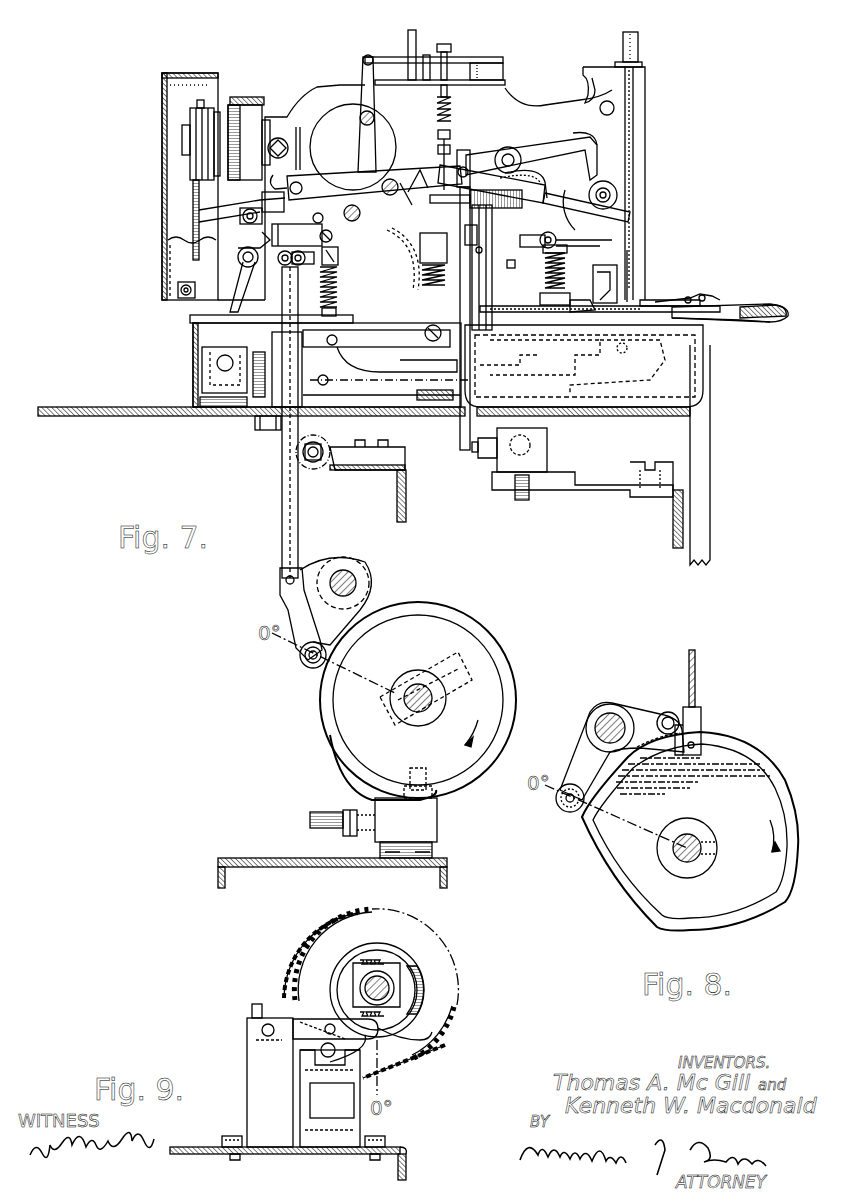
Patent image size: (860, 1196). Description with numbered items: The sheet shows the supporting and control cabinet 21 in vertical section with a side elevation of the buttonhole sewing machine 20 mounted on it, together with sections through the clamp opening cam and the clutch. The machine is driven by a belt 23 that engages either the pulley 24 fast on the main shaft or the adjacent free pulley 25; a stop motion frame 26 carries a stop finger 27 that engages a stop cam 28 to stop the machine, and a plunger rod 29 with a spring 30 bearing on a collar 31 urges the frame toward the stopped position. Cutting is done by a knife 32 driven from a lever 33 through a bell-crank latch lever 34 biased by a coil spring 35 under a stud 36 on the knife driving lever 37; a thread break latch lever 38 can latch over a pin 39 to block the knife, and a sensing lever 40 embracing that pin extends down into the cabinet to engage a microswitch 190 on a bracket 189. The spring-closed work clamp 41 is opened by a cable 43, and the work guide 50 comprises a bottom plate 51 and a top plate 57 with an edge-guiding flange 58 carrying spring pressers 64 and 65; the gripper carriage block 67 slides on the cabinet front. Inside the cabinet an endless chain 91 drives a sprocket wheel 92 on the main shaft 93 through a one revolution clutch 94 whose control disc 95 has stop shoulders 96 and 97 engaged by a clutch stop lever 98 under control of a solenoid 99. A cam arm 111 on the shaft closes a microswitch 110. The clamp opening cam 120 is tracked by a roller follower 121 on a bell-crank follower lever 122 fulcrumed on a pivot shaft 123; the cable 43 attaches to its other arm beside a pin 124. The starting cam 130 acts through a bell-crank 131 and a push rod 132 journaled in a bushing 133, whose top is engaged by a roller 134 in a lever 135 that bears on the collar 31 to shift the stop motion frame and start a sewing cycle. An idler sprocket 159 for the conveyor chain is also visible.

In FIG. 7, the sewing machine 20 is at (650, 128).
In FIG. 7, the cabinet 21 is at (118, 405).
In FIG. 7, the belt 23 is at (185, 240).
In FIG. 7, the pulley 24 is at (217, 115).
In FIG. 7, the pulley 25 is at (196, 130).
In FIG. 7, the stop motion frame 26 is at (250, 205).
In FIG. 7, the stop finger 27 is at (255, 185).
In FIG. 7, the stop cam 28 is at (252, 136).
In FIG. 7, the plunger rod 29 is at (322, 236).
In FIG. 7, the spring 30 is at (340, 290).
In FIG. 7, the collar 31 is at (340, 265).
In FIG. 7, the knife 32 is at (628, 305).
In FIG. 7, the lever 33 is at (320, 202).
In FIG. 7, the bell-crank latch lever 34 is at (412, 195).
In FIG. 7, the coil spring 35 is at (388, 180).
In FIG. 7, the stud 36 is at (460, 165).
In FIG. 7, the knife driving lever 37 is at (540, 152).
In FIG. 7, the latch lever 38 is at (563, 195).
In FIG. 7, the pin 39 is at (488, 208).
In FIG. 7, the sensing lever 40 is at (463, 432).
In FIG. 7, the work holding clamp 41 is at (540, 303).
In FIG. 8, the cable 43 is at (695, 665).
In FIG. 7, the work guide 50 is at (680, 300).
In FIG. 7, the bottom plate 51 is at (685, 378).
In FIG. 7, the top plate 57 is at (742, 322).
In FIG. 7, the edge-guiding flange 58 is at (752, 306).
In FIG. 7, the spring work pressing member 64 is at (662, 308).
In FIG. 7, the spring work pressing member 65 is at (572, 300).
In FIG. 7, the carriage block 67 is at (708, 420).
In FIG. 9, the endless chain 91 is at (292, 985).
In FIG. 9, the sprocket wheel 92 is at (358, 910).
In FIG. 7, the main shaft 93 is at (414, 685).
In FIG. 8, the main shaft 93 is at (695, 846).
In FIG. 9, the main shaft 93 is at (364, 982).
In FIG. 9, the one revolution clutch 94 is at (353, 962).
In FIG. 9, the multiple trip control disc 95 is at (397, 955).
In FIG. 9, the stop shoulder 96 is at (380, 1032).
In FIG. 9, the stop shoulder 97 is at (416, 972).
In FIG. 9, the clutch stop lever 98 is at (342, 1025).
In FIG. 9, the solenoid 99 is at (316, 1108).
In FIG. 7, the microswitch 110 is at (430, 818).
In FIG. 7, the cam arm 111 is at (418, 698).
In FIG. 8, the clamp opening cam 120 is at (760, 802).
In FIG. 8, the roller follower 121 is at (560, 812).
In FIG. 8, the bell-crank follower lever 122 is at (582, 758).
In FIG. 7, the pivot shaft 123 is at (350, 578).
In FIG. 8, the pivot shaft 123 is at (610, 712).
In FIG. 8, the pin 124 is at (665, 712).
In FIG. 7, the sewing machine starting cam 130 is at (468, 640).
In FIG. 7, the bell-crank 131 is at (298, 590).
In FIG. 7, the push rod 132 is at (283, 503).
In FIG. 7, the bushing 133 is at (268, 425).
In FIG. 7, the roller 134 is at (280, 258).
In FIG. 7, the lever 135 is at (320, 250).
In FIG. 7, the idler sprocket 159 is at (322, 458).
In FIG. 7, the bracket 189 is at (598, 470).
In FIG. 7, the microswitch 190 is at (492, 455).